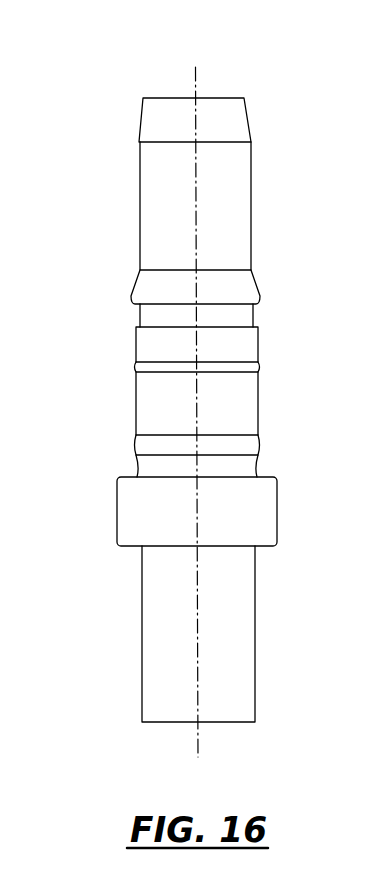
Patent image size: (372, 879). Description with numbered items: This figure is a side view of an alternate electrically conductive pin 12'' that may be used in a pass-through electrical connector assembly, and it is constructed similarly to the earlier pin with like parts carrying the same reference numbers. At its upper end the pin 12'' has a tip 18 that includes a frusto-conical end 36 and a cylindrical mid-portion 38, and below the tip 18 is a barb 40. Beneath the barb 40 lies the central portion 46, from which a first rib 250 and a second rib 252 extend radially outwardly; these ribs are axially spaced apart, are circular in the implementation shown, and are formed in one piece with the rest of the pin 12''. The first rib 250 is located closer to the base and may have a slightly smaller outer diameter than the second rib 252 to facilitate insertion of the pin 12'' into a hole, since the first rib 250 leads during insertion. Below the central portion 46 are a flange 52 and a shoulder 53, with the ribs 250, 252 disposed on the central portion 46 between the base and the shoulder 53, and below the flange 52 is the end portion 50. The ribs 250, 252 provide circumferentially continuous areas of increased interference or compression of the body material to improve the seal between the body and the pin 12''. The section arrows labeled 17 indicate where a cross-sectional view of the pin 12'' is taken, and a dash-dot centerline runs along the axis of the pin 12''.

The electrically conductive pin 12'' is at (315, 93).
The section line 17- 17 is at (196, 113).
The tip 18 is at (132, 98).
The frusto-conical end 36 is at (218, 112).
The cylindrical mid-portion 38 is at (227, 172).
The barb 40 is at (243, 285).
The central portion 46 is at (136, 398).
The end portion 50 is at (160, 600).
The flange 52 is at (128, 508).
The shoulder 53 is at (259, 476).
The first rib 250 is at (270, 366).
The second rib 252 is at (271, 442).